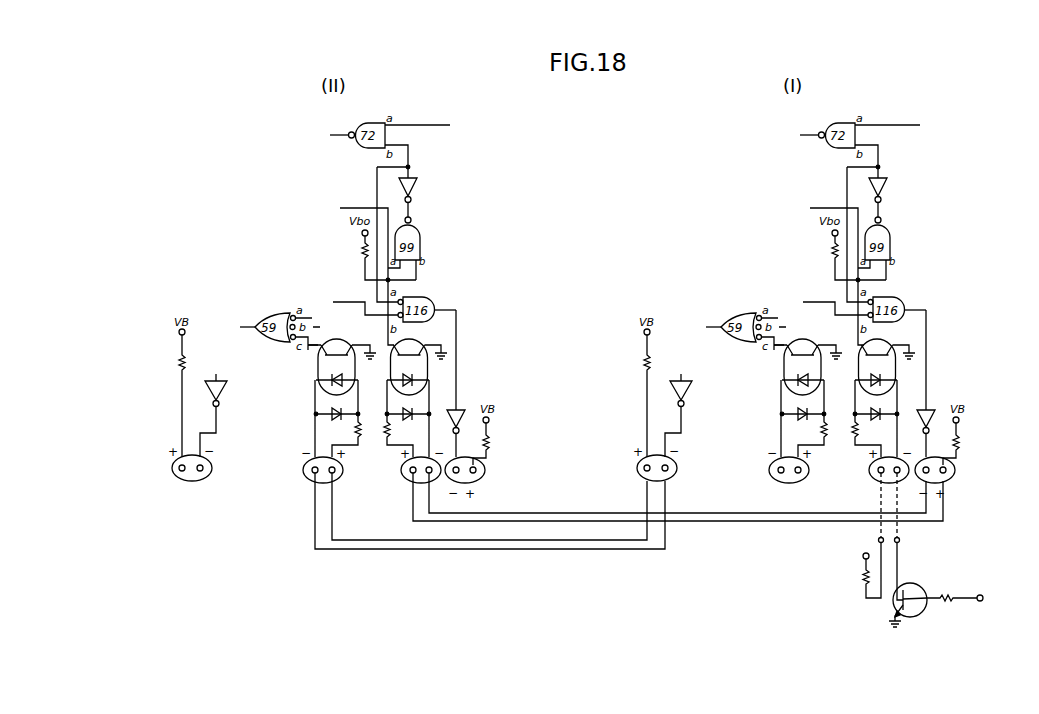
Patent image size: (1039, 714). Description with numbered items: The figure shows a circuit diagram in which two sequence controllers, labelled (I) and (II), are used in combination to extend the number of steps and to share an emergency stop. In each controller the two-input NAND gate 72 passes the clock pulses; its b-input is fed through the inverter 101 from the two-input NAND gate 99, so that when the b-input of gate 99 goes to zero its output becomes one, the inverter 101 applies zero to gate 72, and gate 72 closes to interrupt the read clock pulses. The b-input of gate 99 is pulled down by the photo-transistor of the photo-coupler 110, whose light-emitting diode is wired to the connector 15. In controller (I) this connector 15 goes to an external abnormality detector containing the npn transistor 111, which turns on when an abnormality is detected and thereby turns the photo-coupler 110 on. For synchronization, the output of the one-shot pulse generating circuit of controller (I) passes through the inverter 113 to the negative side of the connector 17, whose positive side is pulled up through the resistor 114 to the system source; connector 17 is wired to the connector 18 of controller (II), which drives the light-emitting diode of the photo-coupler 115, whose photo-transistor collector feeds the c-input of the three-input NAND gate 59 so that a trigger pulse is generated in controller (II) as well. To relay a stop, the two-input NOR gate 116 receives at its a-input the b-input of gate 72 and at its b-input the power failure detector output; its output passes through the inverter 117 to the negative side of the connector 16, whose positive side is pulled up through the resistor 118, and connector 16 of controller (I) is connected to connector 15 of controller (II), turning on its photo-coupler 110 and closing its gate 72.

The 2-input NAND gate 72 is at (625, 145).
The inverter 101 is at (423, 177).
The 2-input NAND gate 99 is at (641, 248).
The 2-input NOR gate 116 is at (629, 311).
The 3-input NAND gate 59 is at (513, 328).
The photo-coupler 115 is at (318, 361).
The photo-coupler 110 is at (392, 360).
The connector 18 is at (306, 476).
The connector 15 is at (404, 476).
The inverter 117 is at (458, 407).
The resistor 118 is at (490, 446).
The connector 16 is at (485, 471).
The resistor 114 is at (178, 367).
The inverter 113 is at (222, 399).
The connector 17 is at (173, 472).
The npn transistor 111 is at (916, 585).